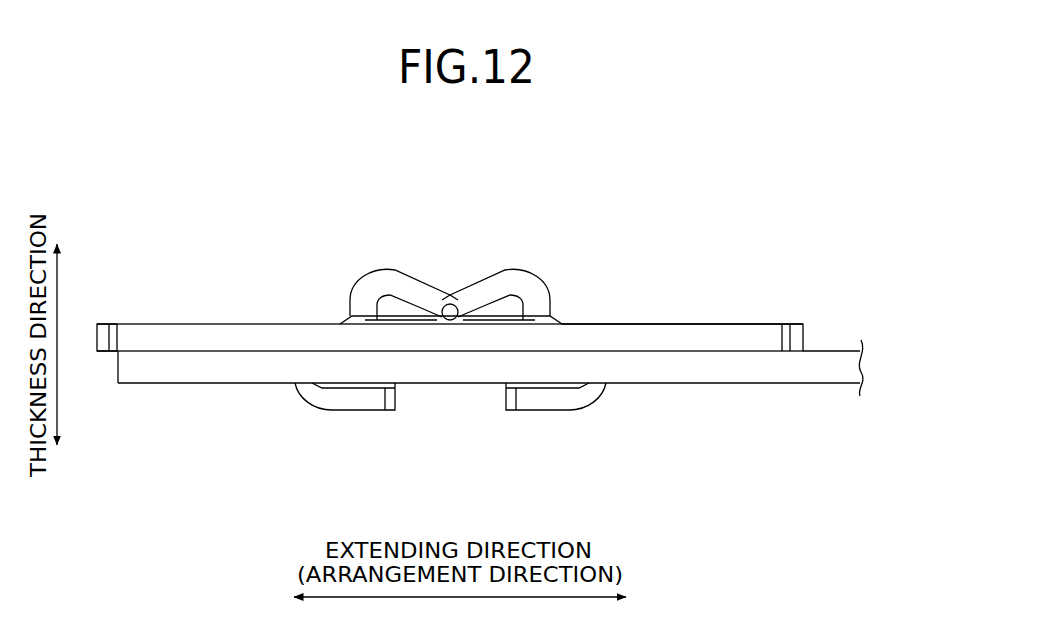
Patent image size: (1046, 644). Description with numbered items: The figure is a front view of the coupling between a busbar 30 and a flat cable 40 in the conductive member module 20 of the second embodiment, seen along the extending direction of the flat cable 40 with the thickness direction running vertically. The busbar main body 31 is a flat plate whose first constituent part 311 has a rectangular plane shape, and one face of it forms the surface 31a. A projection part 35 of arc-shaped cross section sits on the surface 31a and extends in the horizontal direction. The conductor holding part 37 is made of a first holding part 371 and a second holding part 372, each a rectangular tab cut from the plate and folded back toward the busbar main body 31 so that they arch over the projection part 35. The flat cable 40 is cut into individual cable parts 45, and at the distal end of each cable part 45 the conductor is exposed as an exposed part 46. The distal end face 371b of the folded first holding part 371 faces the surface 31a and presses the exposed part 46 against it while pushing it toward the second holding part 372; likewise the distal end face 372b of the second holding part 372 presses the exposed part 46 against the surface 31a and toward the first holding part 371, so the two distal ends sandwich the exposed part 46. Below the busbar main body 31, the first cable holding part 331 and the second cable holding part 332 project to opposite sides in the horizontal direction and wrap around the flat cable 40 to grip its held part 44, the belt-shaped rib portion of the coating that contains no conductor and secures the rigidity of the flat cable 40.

The conductive member module 20 is at (170, 168).
The busbar 30 is at (257, 311).
The busbar main body 31 is at (125, 304).
The first constituent part 311 is at (178, 314).
The surface 31a is at (665, 324).
The projection part 35 is at (512, 310).
The conductor holding part 37 is at (517, 161).
The first holding part 371 is at (494, 268).
The second holding part 372 is at (405, 268).
The distal end face of first holding part 371b is at (468, 314).
The distal end face of second holding part 372b is at (433, 314).
The cable part 45 is at (449, 294).
The exposed part 46 is at (450, 322).
The first cable holding part 331 is at (546, 413).
The second cable holding part 332 is at (352, 413).
The flat cable 40 is at (827, 346).
The held part 44 is at (225, 389).